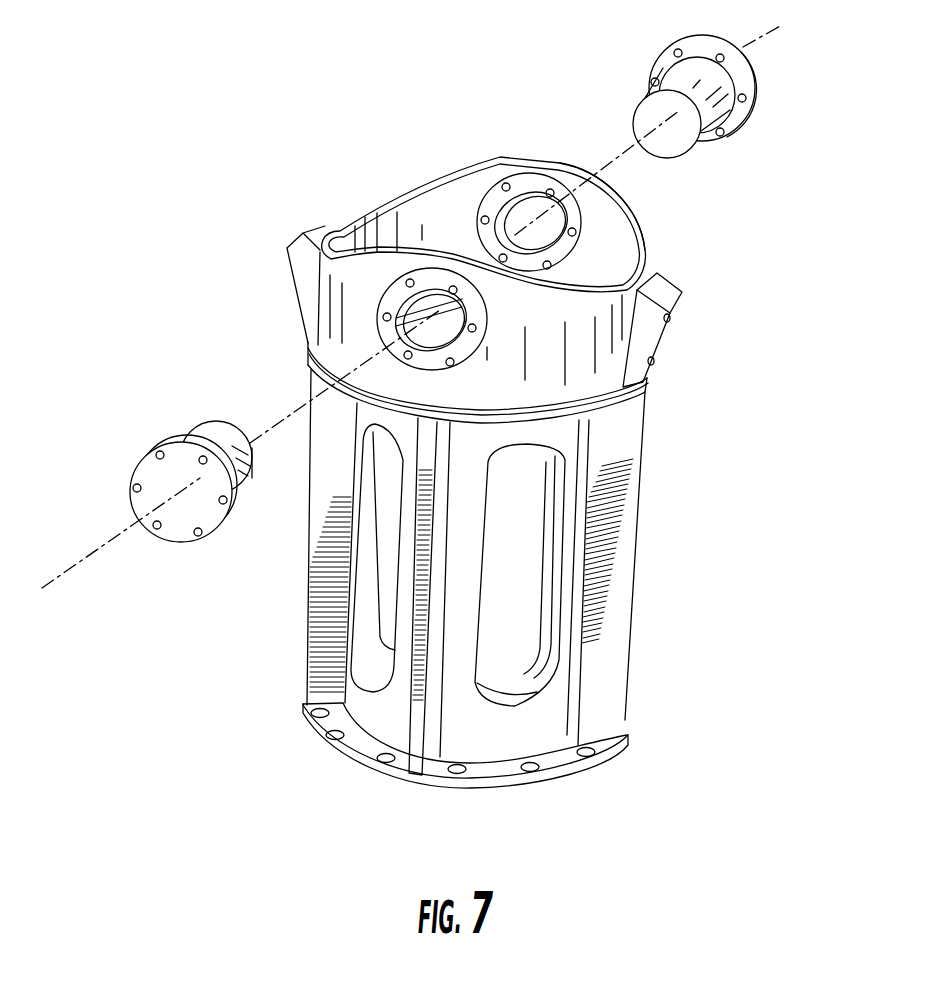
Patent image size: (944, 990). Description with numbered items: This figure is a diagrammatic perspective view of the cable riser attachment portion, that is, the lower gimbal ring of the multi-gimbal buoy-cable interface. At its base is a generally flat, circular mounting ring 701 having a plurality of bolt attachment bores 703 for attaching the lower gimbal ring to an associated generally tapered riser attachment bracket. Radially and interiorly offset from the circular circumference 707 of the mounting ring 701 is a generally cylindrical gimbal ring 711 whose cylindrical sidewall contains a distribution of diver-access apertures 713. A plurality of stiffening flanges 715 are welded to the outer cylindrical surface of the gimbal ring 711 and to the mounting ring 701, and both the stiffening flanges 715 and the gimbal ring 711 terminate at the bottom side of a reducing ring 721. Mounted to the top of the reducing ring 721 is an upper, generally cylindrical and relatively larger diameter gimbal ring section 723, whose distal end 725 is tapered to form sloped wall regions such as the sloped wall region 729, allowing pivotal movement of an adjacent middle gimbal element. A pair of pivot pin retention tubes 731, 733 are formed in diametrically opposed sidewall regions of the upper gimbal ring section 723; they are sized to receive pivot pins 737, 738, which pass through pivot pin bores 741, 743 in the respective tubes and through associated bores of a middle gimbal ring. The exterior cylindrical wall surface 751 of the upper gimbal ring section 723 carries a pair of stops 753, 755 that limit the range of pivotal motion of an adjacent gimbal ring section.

The mounting ring 701 is at (378, 778).
The bolt attachment bores 703 is at (373, 758).
The circular circumference 707 is at (451, 783).
The gimbal ring 711 is at (563, 702).
The diver-access apertures 713 is at (540, 661).
The stiffening flanges 715 is at (447, 611).
The reducing ring 721 is at (294, 368).
The upper gimbal ring section 723 is at (449, 250).
The distal end 725 is at (545, 160).
The sloped wall region 729 is at (613, 209).
The pivot pin retention tube 731 is at (317, 291).
The pivot pin retention tube 733 is at (543, 181).
The pivot pin 737 is at (733, 134).
The pivot pin 738 is at (128, 481).
The pivot pin bore 741 is at (410, 322).
The pivot pin bore 743 is at (524, 210).
The exterior cylindrical wall surface 751 is at (588, 370).
The stop 753 is at (677, 346).
The stop 755 is at (287, 248).